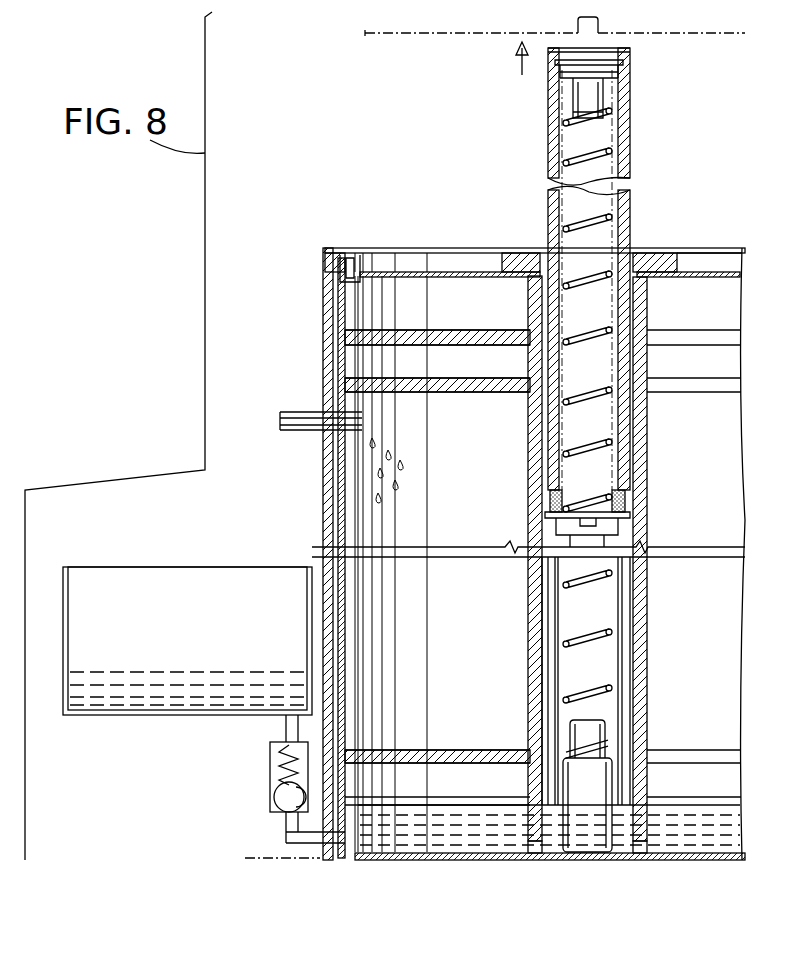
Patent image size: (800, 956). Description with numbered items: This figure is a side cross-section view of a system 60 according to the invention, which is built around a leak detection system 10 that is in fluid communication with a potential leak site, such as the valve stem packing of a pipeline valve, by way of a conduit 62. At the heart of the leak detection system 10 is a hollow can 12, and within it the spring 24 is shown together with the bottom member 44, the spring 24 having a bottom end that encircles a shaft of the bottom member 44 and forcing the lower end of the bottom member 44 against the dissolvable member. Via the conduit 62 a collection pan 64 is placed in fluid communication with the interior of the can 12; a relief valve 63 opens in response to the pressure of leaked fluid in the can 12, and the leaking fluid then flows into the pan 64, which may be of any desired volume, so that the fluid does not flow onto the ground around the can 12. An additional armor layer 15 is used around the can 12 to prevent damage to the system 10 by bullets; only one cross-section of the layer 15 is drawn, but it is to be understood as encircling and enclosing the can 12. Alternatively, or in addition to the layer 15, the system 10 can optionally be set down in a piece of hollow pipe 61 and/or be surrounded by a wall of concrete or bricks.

The leak detection system 10 is at (433, 240).
The hollow can 12 is at (720, 306).
The armor layer 15 is at (330, 520).
The spring 24 is at (565, 638).
The bottom member 44 is at (565, 786).
The system 60 is at (676, 240).
The hollow pipe 61 is at (323, 352).
The conduit 62 is at (286, 836).
The relief valve 63 is at (270, 772).
The collection pan 64 is at (150, 718).